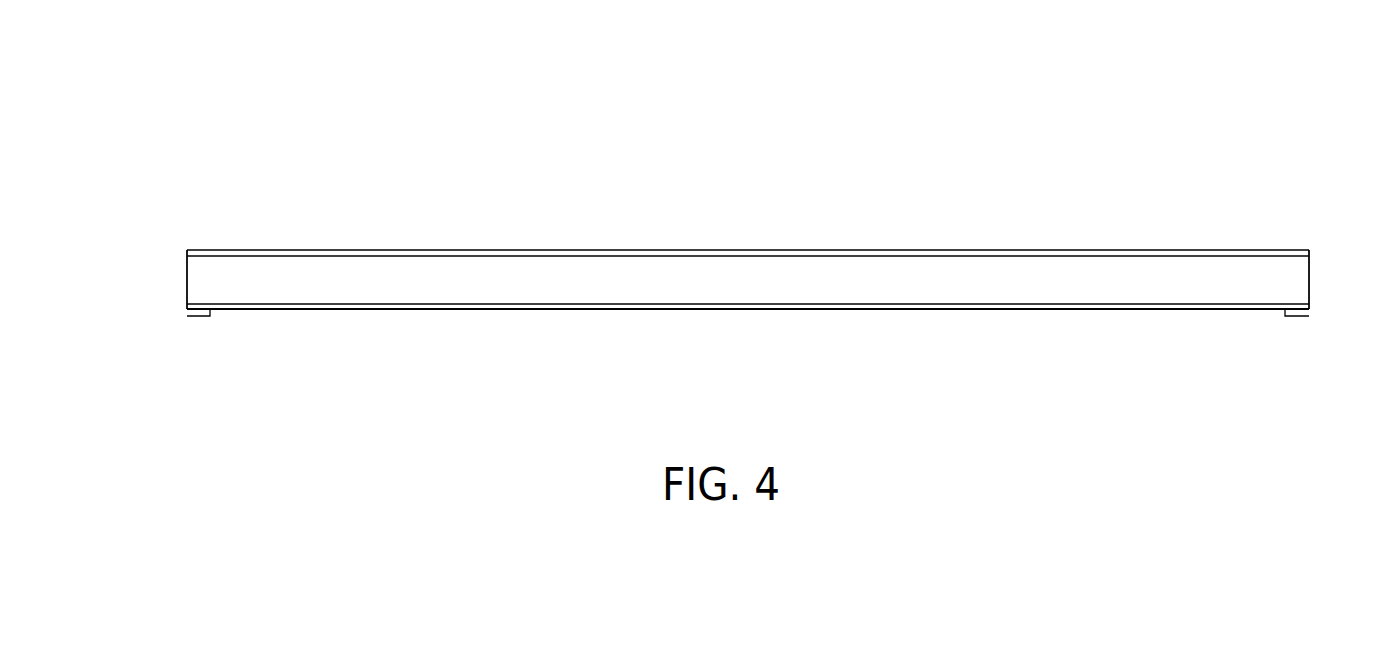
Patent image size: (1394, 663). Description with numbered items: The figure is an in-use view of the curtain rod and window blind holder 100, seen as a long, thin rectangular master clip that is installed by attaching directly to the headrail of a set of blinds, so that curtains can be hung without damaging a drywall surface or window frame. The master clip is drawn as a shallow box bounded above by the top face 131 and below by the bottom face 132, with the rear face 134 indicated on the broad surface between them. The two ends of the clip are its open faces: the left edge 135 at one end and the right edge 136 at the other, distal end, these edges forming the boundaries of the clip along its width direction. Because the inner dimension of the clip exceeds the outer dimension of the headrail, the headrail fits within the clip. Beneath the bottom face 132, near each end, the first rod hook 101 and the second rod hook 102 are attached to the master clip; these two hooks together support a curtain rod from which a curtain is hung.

The curtain rod and window blind holder 100 is at (330, 152).
The first rod hook 101 is at (1300, 316).
The second rod hook 102 is at (200, 316).
The top face 131 is at (666, 250).
The bottom face 132 is at (663, 310).
The rear face 134 is at (1005, 282).
The left edge 135 is at (1309, 278).
The right edge 136 is at (187, 282).